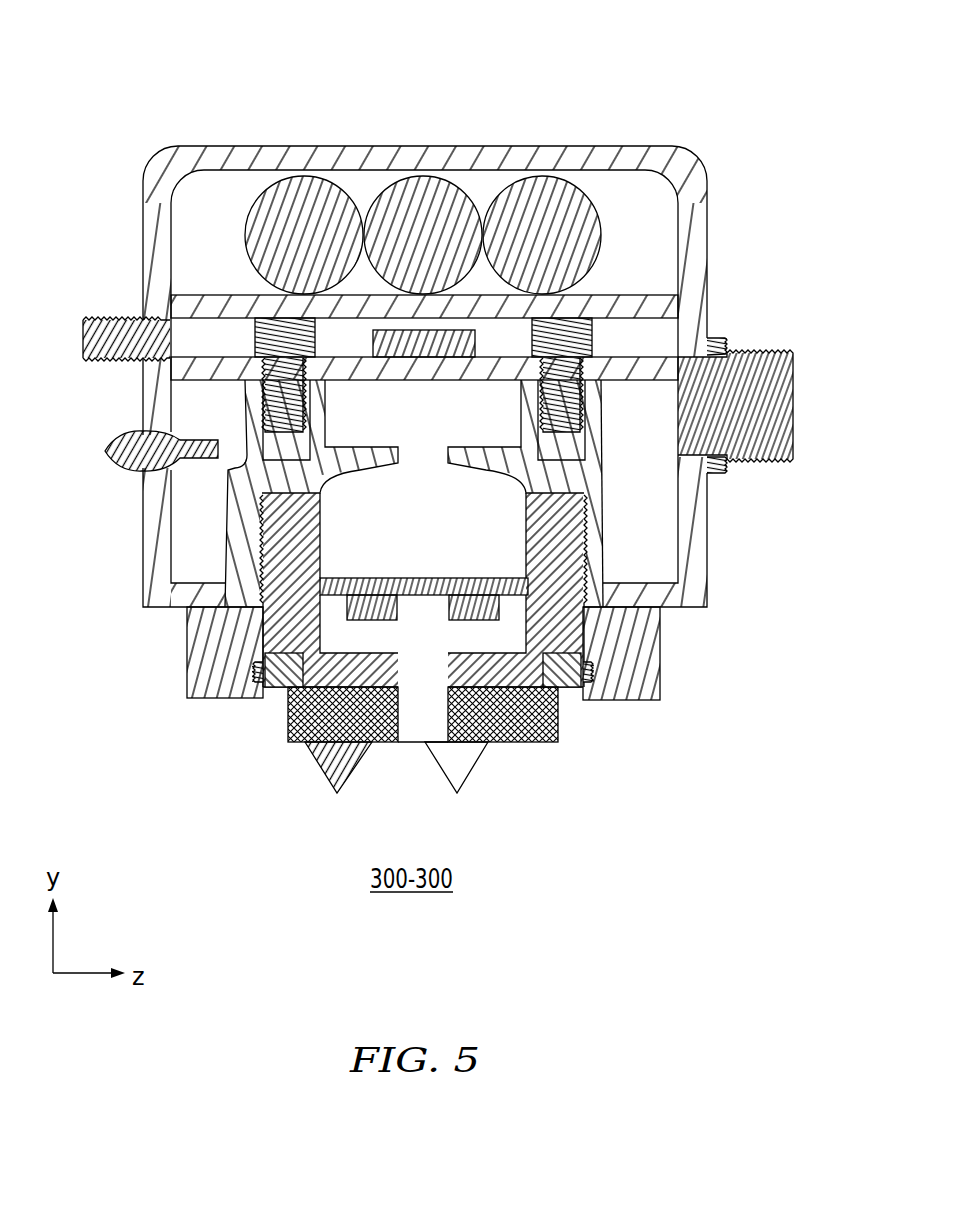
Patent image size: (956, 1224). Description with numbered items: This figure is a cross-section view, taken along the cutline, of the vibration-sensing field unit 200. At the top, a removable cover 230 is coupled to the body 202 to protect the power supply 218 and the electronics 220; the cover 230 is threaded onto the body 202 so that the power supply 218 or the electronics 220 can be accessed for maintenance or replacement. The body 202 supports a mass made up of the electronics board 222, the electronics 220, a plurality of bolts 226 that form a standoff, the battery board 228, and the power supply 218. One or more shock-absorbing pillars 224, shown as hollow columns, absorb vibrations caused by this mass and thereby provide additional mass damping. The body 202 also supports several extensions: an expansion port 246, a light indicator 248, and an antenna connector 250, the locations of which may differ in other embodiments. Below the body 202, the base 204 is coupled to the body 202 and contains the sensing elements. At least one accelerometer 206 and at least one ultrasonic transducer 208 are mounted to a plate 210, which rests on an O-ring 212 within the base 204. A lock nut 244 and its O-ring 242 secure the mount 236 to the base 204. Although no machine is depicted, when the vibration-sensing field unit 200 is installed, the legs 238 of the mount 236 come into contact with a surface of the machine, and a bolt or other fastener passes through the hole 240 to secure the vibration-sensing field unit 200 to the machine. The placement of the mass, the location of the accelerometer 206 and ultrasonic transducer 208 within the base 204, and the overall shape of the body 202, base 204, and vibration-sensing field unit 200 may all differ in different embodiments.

The vibration-sensing field unit 200 is at (112, 38).
The body 202 is at (704, 560).
The base 204 is at (265, 622).
The accelerometer 206 is at (490, 577).
The ultrasonic transducer 208 is at (373, 580).
The plate 210 is at (440, 575).
The O-ring 212 is at (530, 600).
The power supply 218 is at (482, 180).
The electronics 220 is at (440, 365).
The electronics board 222 is at (180, 377).
The shock-absorbing pillars 224 is at (338, 410).
The bolts 226 is at (598, 328).
The battery board 228 is at (630, 297).
The cover 230 is at (620, 160).
The mount 236 is at (560, 723).
The legs 238 is at (313, 762).
The hole 240 is at (402, 763).
The O-ring 242 is at (252, 673).
The lock nut 244 is at (663, 677).
The expansion port 246 is at (785, 402).
The light indicator 248 is at (113, 460).
The antenna connector 250 is at (108, 320).